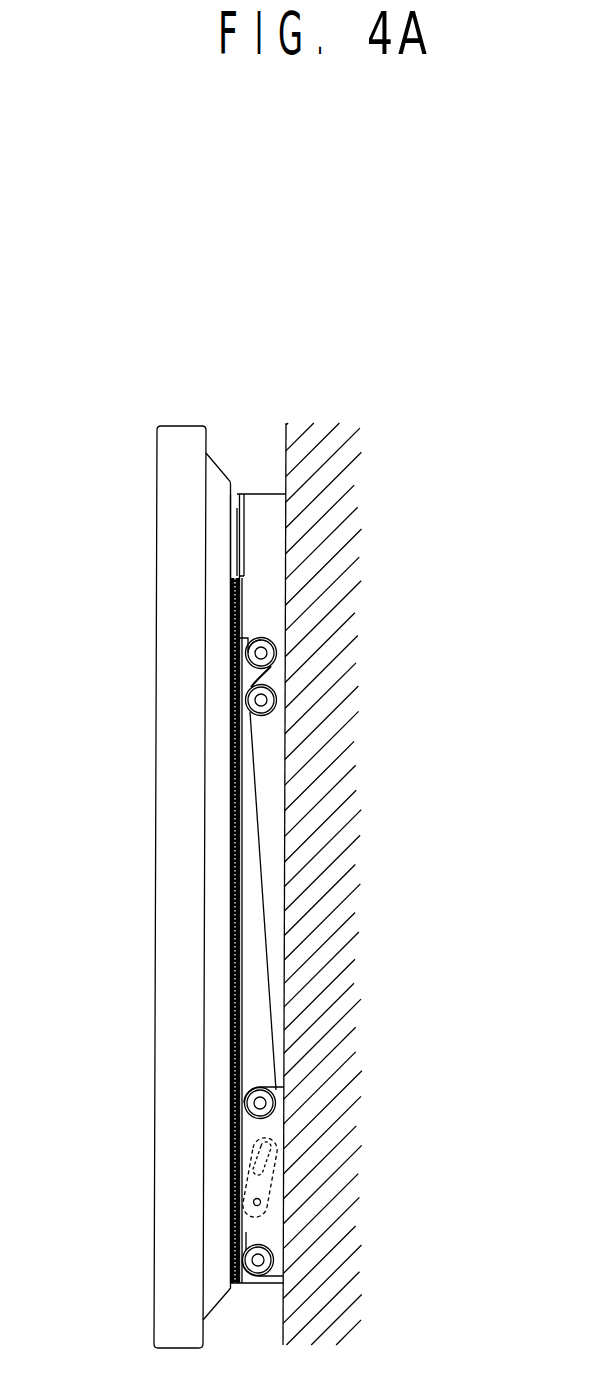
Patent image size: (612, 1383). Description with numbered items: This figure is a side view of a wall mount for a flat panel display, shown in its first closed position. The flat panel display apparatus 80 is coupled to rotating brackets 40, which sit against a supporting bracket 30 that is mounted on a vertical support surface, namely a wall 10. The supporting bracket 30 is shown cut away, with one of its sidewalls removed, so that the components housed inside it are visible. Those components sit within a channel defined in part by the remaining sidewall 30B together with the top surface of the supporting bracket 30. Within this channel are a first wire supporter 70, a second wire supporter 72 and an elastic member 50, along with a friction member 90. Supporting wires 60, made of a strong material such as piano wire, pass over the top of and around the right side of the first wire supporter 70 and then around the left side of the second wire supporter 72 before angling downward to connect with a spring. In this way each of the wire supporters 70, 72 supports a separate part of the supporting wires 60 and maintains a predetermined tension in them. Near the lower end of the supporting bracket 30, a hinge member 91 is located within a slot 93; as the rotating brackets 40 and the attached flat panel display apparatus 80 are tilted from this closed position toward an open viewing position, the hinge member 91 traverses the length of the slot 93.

The wall 10 is at (347, 567).
The sidewall 30B is at (252, 543).
The supporting bracket 30 is at (232, 841).
The rotating bracket 40 is at (232, 944).
The elastic member 50 is at (280, 1099).
The supporting wires 60 is at (270, 880).
The first wire supporter 70 is at (285, 647).
The second wire supporter 72 is at (285, 700).
The flat panel display apparatus 80 is at (165, 1060).
The friction member 90 is at (275, 1213).
The hinge member 91 is at (272, 1142).
The slot 93 is at (275, 1185).